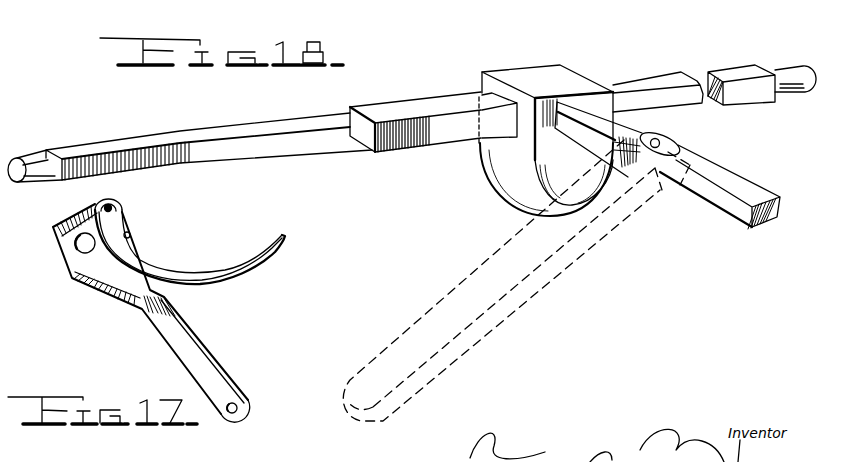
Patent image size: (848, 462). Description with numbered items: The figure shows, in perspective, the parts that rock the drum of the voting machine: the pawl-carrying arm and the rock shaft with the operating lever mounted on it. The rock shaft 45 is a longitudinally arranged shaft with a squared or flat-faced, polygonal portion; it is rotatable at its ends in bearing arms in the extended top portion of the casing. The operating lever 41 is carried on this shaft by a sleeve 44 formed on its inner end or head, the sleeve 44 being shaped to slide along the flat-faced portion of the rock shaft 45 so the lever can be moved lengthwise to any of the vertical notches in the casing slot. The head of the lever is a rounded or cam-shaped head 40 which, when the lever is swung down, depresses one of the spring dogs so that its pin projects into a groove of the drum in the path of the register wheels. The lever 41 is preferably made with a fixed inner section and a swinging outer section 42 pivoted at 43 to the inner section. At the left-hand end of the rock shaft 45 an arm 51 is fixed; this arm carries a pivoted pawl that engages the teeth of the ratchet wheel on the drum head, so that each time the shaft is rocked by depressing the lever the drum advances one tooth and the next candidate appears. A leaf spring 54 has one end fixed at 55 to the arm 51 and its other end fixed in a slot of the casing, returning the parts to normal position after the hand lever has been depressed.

In FIG. 18, the cam-shaped head 40 is at (497, 193).
In FIG. 18, the operating lever 41 is at (604, 117).
In FIG. 18, the swinging outer section 42 is at (717, 210).
In FIG. 18, the pivot 43 is at (676, 140).
In FIG. 18, the sleeve 44 is at (413, 100).
In FIG. 18, the rock shaft 45 is at (219, 132).
In FIG. 17, the arm 51 is at (218, 360).
In FIG. 17, the leaf spring 54 is at (244, 262).
In FIG. 17, the fixing point 55 is at (130, 235).